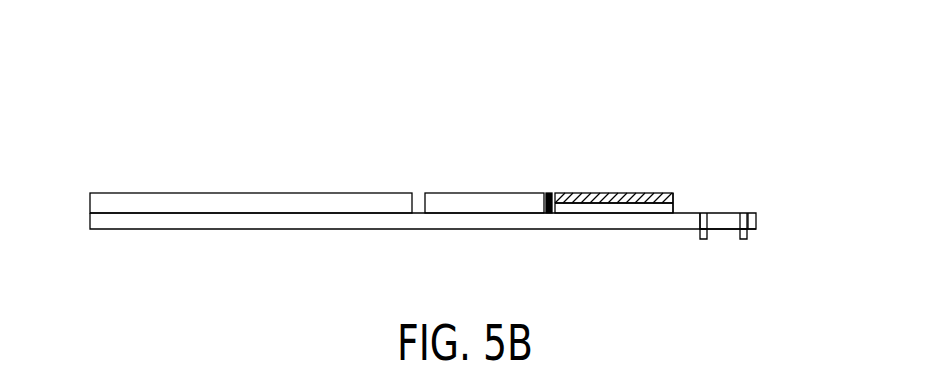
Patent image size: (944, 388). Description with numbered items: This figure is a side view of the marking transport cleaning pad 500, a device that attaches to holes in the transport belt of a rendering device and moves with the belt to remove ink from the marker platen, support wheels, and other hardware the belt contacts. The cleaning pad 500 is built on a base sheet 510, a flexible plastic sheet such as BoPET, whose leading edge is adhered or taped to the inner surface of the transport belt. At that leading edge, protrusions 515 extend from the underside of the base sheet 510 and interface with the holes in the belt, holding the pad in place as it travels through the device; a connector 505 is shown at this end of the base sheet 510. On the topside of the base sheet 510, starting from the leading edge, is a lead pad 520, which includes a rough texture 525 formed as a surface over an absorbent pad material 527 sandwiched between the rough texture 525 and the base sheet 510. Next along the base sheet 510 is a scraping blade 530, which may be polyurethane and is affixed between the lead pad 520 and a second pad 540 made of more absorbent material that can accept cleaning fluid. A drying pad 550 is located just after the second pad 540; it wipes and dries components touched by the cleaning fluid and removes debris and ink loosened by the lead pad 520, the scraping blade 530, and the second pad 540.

The cleaning pad 500 is at (196, 111).
The connector 505 is at (762, 211).
The base sheet 510 is at (727, 213).
The protrusions 515 is at (704, 240).
The lead pad 520 is at (684, 192).
The rough texture 525 is at (603, 193).
The absorbent pad material 527 is at (647, 200).
The scraping blade 530 is at (550, 192).
The second pad 540 is at (487, 200).
The drying pad 550 is at (302, 200).